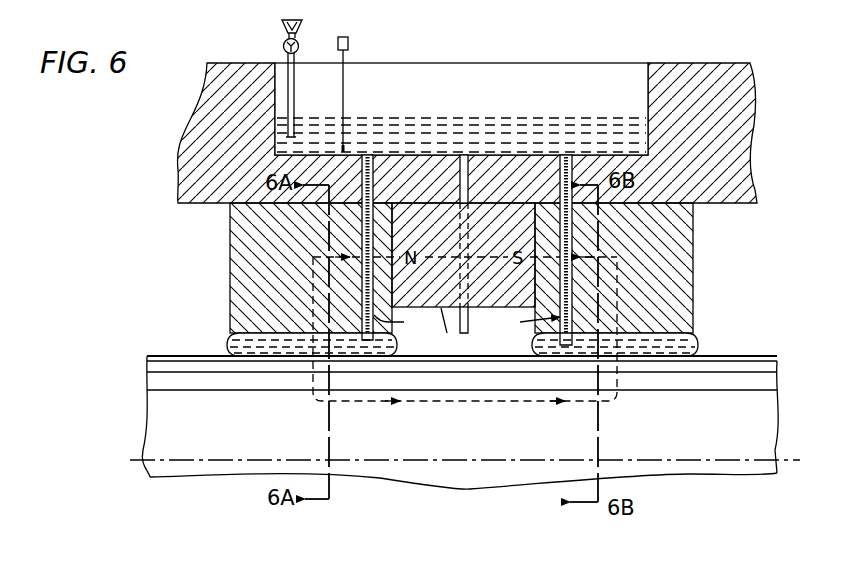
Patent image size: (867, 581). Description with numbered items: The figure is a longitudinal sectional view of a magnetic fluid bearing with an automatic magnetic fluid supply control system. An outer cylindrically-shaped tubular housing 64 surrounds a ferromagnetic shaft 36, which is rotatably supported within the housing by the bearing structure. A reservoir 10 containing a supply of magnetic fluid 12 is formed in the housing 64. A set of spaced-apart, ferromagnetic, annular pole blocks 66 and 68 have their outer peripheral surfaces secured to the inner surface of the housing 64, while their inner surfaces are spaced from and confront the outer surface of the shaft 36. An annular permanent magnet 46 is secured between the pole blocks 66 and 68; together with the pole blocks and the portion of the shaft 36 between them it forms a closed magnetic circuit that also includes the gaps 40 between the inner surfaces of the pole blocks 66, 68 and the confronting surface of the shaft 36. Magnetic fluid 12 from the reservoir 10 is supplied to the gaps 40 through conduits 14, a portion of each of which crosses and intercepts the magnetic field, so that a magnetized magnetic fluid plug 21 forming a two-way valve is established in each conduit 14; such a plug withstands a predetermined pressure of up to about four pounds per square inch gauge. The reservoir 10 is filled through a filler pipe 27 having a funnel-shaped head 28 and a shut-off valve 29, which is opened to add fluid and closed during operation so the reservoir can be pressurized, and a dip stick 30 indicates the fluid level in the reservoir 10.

The reservoir 10 is at (522, 65).
The magnetic fluid 12 is at (443, 141).
The conduit 14 is at (362, 228).
The magnetic fluid plug 21 is at (467, 325).
The filler pipe 27 is at (296, 87).
The funnel-shaped head 28 is at (282, 22).
The shut-off valve 29 is at (283, 46).
The dip stick 30 is at (350, 45).
The ferromagnetic shaft 36 is at (720, 433).
The gap 40 is at (227, 346).
The annular permanent magnet 46 is at (441, 334).
The outer housing 64 is at (713, 67).
The annular pole block 66 is at (228, 252).
The annular pole block 68 is at (695, 252).